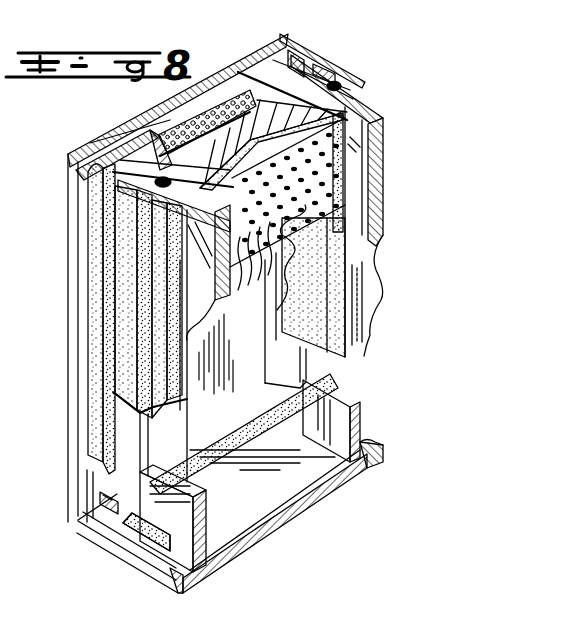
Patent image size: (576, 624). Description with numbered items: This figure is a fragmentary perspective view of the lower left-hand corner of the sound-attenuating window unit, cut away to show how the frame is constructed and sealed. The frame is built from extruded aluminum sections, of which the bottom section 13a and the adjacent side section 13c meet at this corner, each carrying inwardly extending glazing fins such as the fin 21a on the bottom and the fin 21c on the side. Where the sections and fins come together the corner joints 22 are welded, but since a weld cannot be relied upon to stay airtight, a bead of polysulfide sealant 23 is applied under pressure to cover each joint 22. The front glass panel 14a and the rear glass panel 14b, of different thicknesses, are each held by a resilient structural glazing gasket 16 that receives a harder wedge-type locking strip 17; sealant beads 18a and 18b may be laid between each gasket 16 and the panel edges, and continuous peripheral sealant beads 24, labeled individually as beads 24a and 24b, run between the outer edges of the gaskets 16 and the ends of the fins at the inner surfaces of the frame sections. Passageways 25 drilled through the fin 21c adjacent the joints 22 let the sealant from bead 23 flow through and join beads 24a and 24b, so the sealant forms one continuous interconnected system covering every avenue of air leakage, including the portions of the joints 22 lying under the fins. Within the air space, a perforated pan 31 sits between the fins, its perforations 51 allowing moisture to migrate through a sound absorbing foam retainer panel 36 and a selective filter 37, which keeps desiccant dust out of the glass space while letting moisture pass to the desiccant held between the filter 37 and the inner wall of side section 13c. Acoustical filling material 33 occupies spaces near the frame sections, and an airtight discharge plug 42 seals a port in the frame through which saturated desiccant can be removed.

The bottom frame section 13a is at (278, 520).
The side frame section 13c is at (137, 116).
The front glass panel 14a is at (197, 295).
The rear glass panel 14b is at (377, 330).
The structural glazing gasket 16 is at (312, 70).
The locking strip 17 is at (335, 75).
The sealant bead 18a is at (160, 213).
The sealant bead 18b is at (343, 81).
The glazing fin 21a is at (343, 443).
The glazing fin 21c is at (277, 57).
The joint 22 is at (103, 530).
The sealant bead 23 is at (213, 450).
The cover member 24 is at (295, 50).
The sealant bead 24a is at (110, 170).
The sealant bead 24b is at (374, 460).
The passageway 25 is at (103, 495).
The perforated pan 31 is at (277, 310).
The acoustical filling material 33 is at (176, 303).
The sound absorbing panel 36 is at (170, 100).
The selective filter 37 is at (238, 72).
The discharge plug 42 is at (193, 492).
The perforations 51 is at (252, 270).